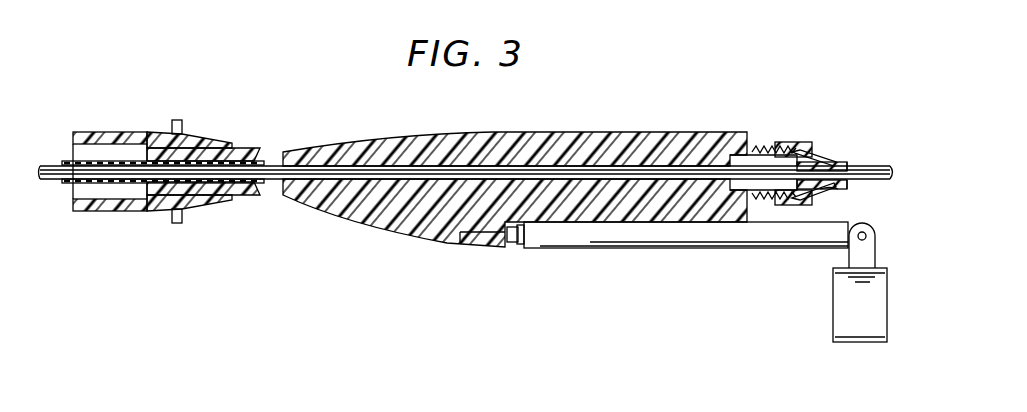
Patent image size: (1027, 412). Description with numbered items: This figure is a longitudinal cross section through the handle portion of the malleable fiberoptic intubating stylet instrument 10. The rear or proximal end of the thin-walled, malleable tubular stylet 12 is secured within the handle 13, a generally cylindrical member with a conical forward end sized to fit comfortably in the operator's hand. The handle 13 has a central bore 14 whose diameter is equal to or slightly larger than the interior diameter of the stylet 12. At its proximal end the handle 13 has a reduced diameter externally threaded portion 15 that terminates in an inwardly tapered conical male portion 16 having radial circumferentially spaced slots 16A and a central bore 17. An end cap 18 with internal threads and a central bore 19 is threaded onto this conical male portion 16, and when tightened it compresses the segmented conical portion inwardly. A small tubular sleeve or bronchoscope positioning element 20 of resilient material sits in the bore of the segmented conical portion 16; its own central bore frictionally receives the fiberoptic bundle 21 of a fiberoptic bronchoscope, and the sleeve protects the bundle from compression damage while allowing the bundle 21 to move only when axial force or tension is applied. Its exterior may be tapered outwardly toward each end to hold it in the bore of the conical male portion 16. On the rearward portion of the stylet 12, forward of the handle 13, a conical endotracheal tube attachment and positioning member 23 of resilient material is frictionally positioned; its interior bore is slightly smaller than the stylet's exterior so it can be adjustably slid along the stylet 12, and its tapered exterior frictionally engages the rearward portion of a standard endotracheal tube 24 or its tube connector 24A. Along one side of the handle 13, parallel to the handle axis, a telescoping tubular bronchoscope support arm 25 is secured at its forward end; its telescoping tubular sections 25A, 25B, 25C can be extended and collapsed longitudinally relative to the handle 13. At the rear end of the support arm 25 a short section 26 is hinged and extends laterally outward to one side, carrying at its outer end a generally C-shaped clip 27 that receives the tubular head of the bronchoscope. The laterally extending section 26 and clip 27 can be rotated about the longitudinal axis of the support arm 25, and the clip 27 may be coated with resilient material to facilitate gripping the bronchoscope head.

The malleable fiberoptic intubating stylet instrument 10 is at (642, 100).
The stylet 12 is at (270, 158).
The handle 13 is at (442, 132).
The central bore 14 is at (546, 178).
The externally threaded portion 15 is at (777, 141).
The conical male portion 16 is at (827, 162).
The radial circumferentially spaced slots 16A is at (826, 165).
The central bore 17 is at (833, 160).
The end cap 18 is at (805, 143).
The central bore 19 is at (820, 190).
The bronchoscope positioning element 20 is at (847, 183).
The fiberoptic bundle 21 is at (53, 180).
The endotracheal tube attachment and positioning member 23 is at (245, 145).
The endotracheal tube 24 is at (108, 130).
The tube connector 24A is at (193, 133).
The telescoping tubular bronchoscope support arm 25 is at (694, 260).
The telescoping tubular section 25A is at (510, 243).
The telescoping tubular section 25B is at (520, 243).
The telescoping tubular section 25C is at (620, 242).
The short hinged section 26 is at (867, 258).
The C-shaped clip 27 is at (845, 308).